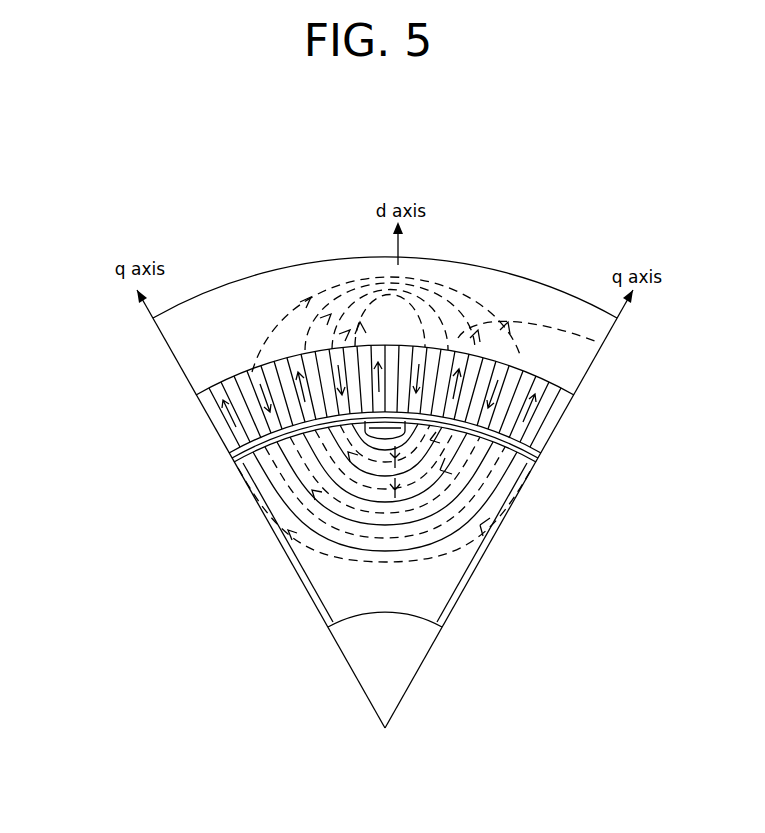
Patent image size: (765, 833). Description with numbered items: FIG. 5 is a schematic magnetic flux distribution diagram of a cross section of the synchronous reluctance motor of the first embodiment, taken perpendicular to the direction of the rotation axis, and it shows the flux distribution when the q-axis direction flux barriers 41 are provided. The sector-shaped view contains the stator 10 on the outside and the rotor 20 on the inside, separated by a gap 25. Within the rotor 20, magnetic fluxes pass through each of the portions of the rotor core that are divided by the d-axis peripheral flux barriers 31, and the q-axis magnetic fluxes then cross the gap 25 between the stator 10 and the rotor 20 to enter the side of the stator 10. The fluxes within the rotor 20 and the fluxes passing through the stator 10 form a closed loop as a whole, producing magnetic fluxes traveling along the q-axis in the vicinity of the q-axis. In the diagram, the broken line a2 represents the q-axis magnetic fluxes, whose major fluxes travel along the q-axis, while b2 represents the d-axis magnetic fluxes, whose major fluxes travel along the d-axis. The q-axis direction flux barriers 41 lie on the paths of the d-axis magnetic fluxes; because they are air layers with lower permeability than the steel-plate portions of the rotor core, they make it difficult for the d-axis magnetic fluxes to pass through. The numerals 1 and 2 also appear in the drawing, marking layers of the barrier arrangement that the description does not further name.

The stator 10 is at (168, 390).
The rotor 20 is at (132, 548).
The gap 25 is at (548, 452).
The d-axis peripheral flux barrier 31 is at (283, 468).
The q-axis direction flux barrier 41 is at (470, 567).
The first flux barrier layer 1 is at (372, 455).
The second flux barrier layer 2 is at (338, 572).
The q-axis magnetic fluxes a2 is at (325, 270).
The d-axis magnetic fluxes b2 is at (553, 300).